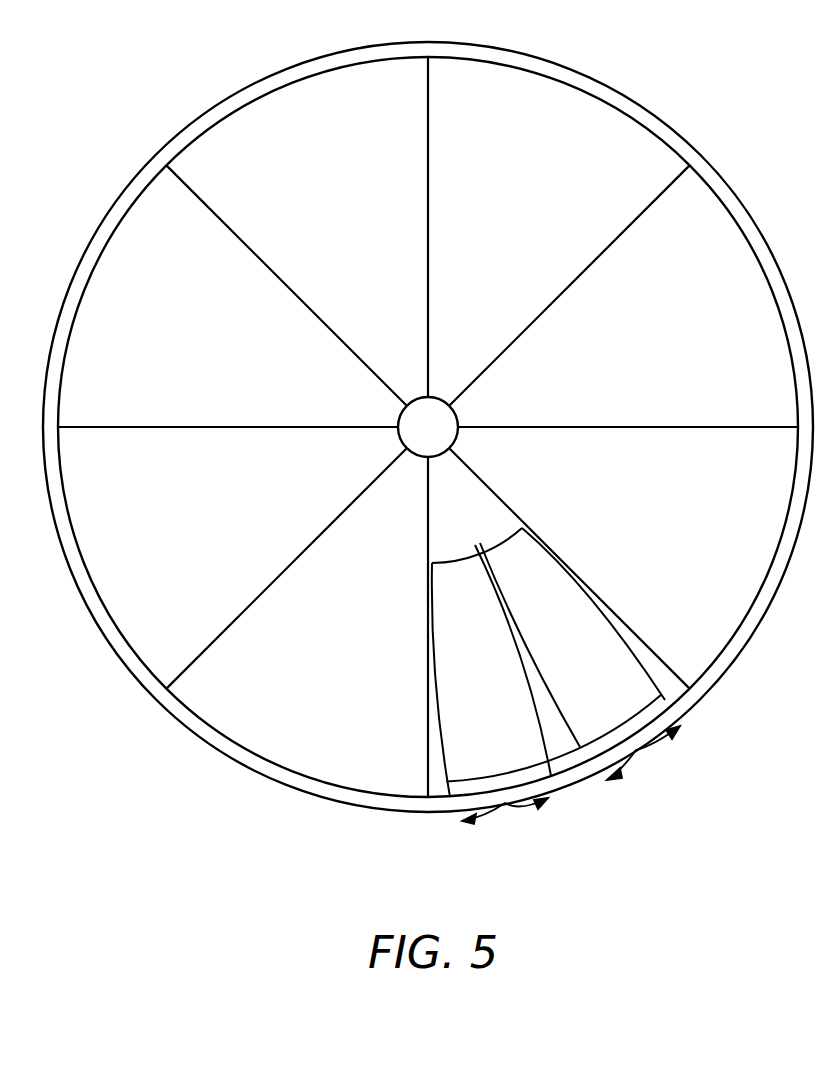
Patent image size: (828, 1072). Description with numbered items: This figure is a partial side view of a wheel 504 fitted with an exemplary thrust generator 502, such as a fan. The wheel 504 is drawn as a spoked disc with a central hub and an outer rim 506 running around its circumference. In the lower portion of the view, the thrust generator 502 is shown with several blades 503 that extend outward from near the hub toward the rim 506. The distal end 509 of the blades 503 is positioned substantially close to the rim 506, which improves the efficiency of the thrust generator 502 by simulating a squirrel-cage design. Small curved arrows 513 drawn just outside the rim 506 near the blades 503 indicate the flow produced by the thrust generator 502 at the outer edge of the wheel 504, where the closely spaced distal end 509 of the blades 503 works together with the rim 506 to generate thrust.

The thrust generator 502 is at (591, 556).
The blades 503 is at (457, 629).
The wheel 504 is at (692, 146).
The rim 506 is at (289, 82).
The distal end 509 is at (485, 756).
The air flow 513 is at (647, 749).